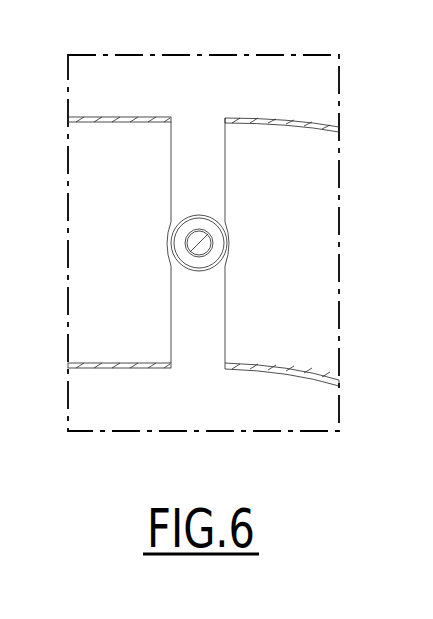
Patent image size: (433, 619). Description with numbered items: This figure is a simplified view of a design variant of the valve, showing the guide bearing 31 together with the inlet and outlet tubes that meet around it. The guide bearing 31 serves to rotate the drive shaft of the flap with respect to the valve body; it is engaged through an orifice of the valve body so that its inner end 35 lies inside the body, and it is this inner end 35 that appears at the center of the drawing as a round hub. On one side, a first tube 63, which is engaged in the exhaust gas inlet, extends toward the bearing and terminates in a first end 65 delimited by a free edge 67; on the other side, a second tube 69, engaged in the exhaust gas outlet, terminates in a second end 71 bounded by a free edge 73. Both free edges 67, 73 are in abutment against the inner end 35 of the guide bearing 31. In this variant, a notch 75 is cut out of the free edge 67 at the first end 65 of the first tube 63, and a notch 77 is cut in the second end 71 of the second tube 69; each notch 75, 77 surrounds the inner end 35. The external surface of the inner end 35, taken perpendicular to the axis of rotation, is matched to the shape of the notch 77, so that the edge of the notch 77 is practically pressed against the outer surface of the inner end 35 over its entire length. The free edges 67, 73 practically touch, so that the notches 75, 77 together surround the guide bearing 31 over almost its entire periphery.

The guide bearing 31 is at (240, 255).
The inner end 35 is at (182, 249).
The first tube 63 is at (104, 365).
The first end 65 is at (151, 337).
The free edge 67 is at (170, 321).
The second tube 69 is at (307, 372).
The second end 71 is at (247, 337).
The free edge 73 is at (225, 168).
The notch 75 is at (168, 226).
The notch 77 is at (231, 224).